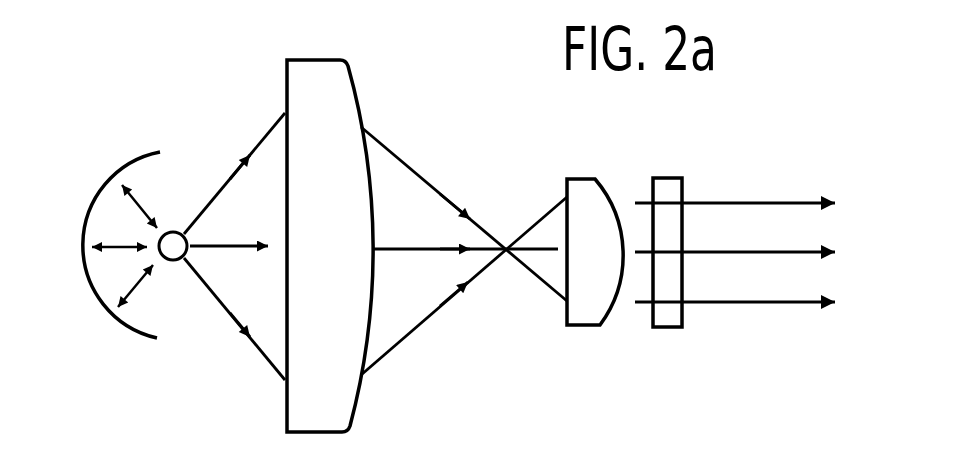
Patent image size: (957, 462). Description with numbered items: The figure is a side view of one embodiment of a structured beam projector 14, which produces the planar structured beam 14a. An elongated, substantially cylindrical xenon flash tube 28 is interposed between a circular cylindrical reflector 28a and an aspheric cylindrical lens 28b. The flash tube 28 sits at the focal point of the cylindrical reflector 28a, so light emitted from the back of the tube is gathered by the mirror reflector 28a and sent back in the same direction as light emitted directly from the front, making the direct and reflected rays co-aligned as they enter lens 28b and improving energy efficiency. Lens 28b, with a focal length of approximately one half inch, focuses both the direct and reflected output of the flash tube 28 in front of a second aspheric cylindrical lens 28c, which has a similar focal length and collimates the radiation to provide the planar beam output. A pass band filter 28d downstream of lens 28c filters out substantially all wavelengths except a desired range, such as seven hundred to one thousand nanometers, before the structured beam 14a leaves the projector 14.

The beam projector 14 is at (313, 192).
The structured beam 14a is at (730, 203).
The xenon flash tube 28 is at (143, 261).
The circular cylindrical reflector 28a is at (95, 230).
The aspheric cylindrical lens 28b is at (300, 217).
The second aspheric cylindrical lens 28c is at (578, 178).
The pass band filter 28d is at (677, 327).